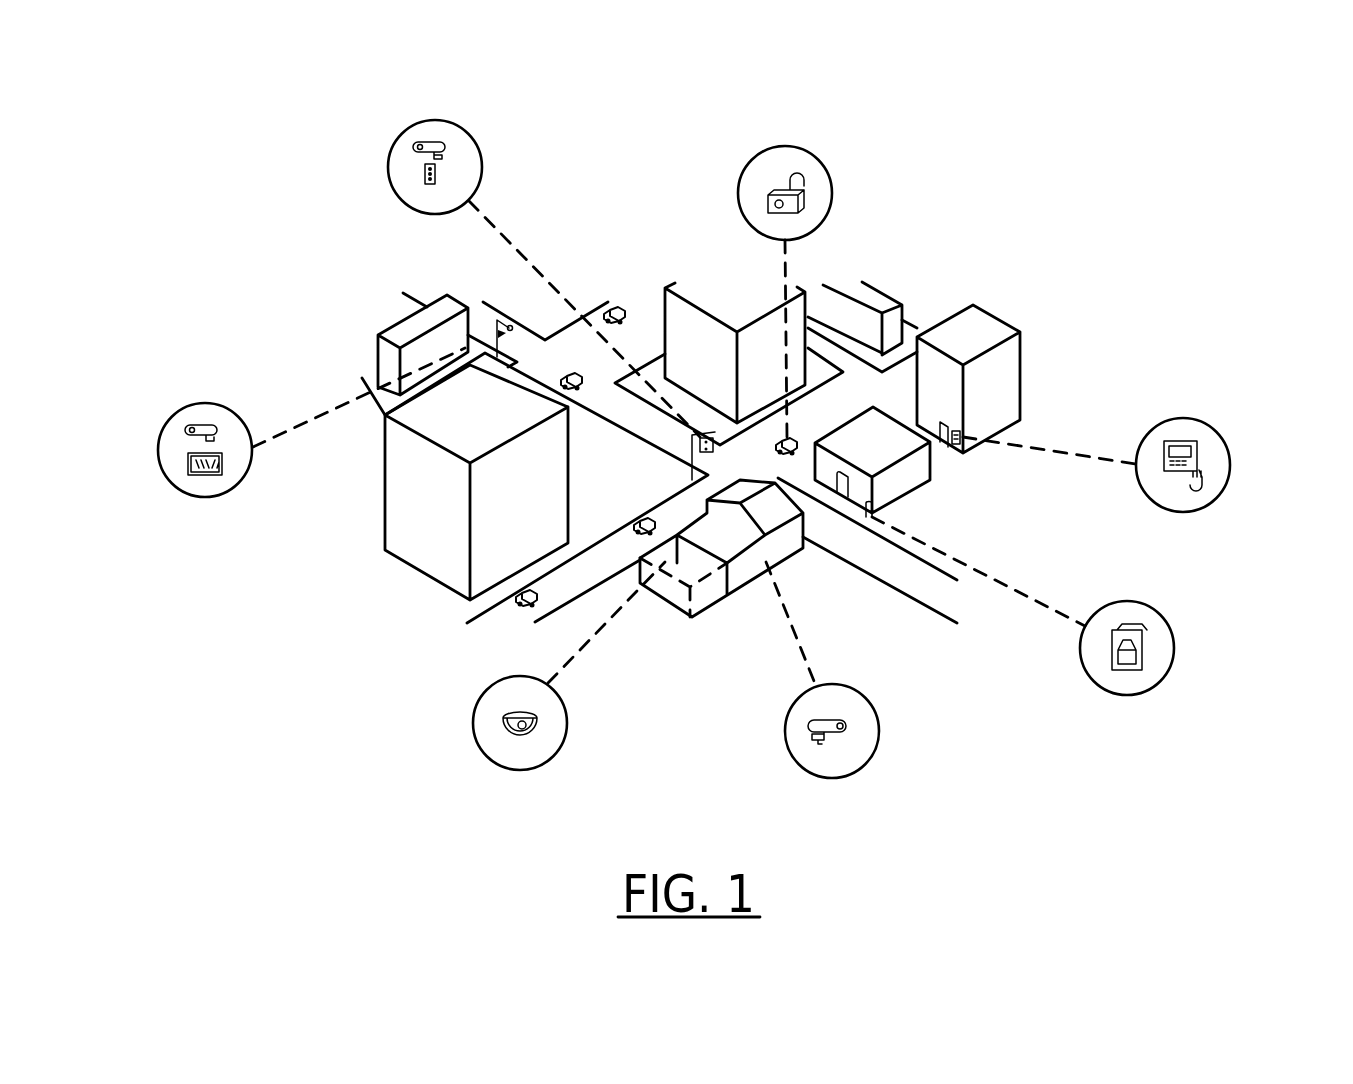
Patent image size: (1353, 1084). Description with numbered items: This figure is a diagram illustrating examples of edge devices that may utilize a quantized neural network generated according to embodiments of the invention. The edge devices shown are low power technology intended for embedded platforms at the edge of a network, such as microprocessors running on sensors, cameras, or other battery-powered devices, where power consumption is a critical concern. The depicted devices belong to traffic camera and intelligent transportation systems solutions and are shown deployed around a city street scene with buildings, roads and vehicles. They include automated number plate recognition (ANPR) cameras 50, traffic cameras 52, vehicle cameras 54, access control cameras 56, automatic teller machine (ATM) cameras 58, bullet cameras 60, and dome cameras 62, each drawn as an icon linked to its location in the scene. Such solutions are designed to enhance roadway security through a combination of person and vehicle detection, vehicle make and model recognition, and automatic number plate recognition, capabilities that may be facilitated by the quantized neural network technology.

The automated number plate recognition (ANPR) cameras 50 is at (182, 408).
The traffic cameras 52 is at (400, 135).
The vehicle cameras 54 is at (742, 174).
The access control cameras 56 is at (1223, 438).
The automatic teller machine (ATM) cameras 58 is at (1156, 609).
The bullet cameras 60 is at (855, 689).
The dome cameras 62 is at (490, 684).